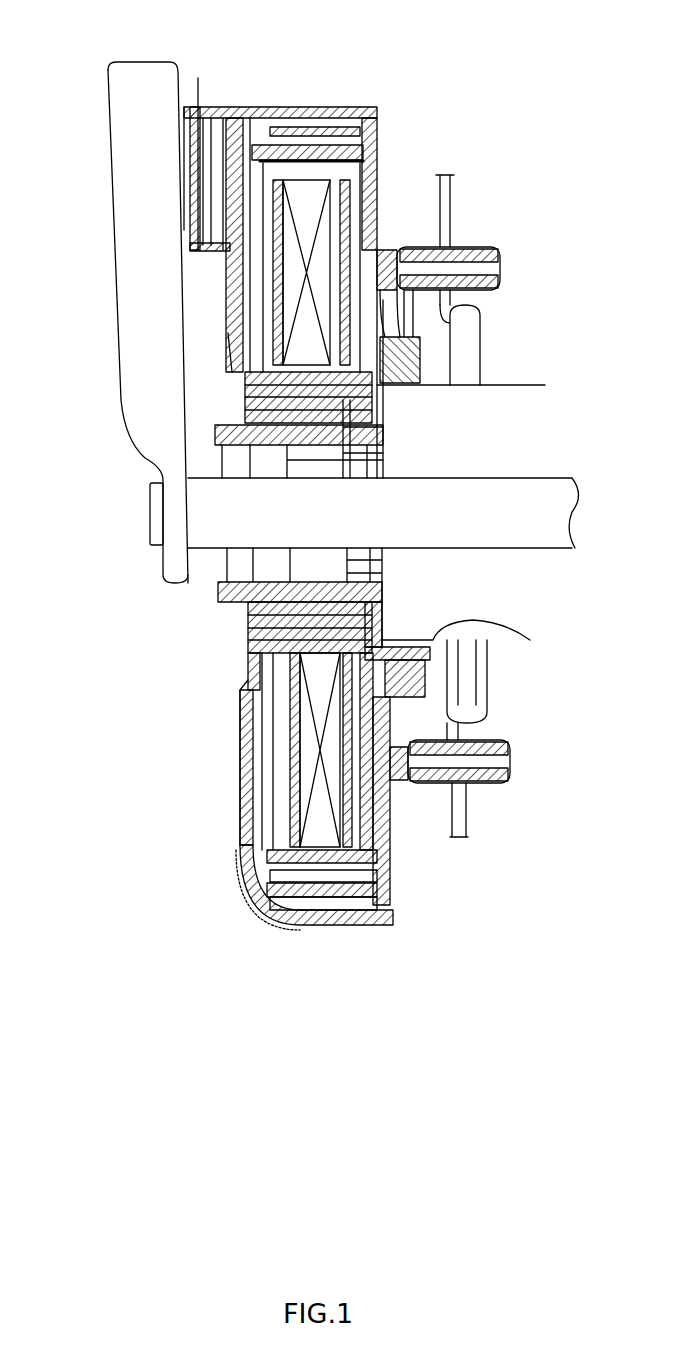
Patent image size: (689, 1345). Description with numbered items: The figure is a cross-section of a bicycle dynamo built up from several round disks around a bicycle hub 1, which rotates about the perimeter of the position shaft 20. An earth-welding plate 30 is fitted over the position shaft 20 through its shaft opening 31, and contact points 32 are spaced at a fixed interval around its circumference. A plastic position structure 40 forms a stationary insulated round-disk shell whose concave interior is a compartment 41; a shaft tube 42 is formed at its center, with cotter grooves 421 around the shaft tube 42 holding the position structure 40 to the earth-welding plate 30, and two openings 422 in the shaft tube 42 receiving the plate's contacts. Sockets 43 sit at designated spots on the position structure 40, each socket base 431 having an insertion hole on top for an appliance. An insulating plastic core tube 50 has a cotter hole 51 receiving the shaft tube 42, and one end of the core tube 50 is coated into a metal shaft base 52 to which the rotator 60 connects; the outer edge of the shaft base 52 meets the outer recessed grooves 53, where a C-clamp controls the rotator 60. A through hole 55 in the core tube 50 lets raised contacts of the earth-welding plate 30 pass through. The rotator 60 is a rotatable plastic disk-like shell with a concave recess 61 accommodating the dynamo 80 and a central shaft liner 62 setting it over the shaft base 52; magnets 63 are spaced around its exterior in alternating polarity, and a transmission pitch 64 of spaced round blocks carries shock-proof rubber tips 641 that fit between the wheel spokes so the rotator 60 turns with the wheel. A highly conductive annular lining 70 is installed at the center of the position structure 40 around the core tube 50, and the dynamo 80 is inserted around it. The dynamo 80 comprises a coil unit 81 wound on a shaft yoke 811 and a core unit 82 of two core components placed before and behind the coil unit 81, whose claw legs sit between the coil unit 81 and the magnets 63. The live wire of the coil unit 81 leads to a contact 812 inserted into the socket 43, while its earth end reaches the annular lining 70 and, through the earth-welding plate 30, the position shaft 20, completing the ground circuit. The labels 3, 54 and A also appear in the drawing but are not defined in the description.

The bicycle hub 1 is at (545, 393).
The terminal 3 is at (450, 193).
The position shaft 20 is at (568, 475).
The earth-welding plate 30 is at (390, 436).
The shaft opening 31 is at (182, 565).
The contact points 32 is at (395, 400).
The position structure 40 is at (270, 96).
The compartment 41 is at (250, 123).
The shaft tube 42 is at (250, 405).
The socket 43 is at (183, 210).
The core tube 50 is at (430, 370).
The cotter hole 51 is at (247, 388).
The shaft base 52 is at (397, 347).
The outer recessed grooves 53 is at (530, 640).
The lead wire loop 54 is at (443, 300).
The through hole 55 is at (250, 637).
The rotator 60 is at (382, 130).
The concave recess 61 is at (378, 168).
The shaft liner 62 is at (411, 247).
The magnets 63 is at (330, 140).
The transmission pitch 64 is at (490, 790).
The annular lining 70 is at (383, 613).
The dynamo 80 is at (322, 178).
The coil unit 81 is at (325, 840).
The core unit 82 is at (370, 835).
The cotter grooves 421 is at (233, 602).
The openings 422 is at (247, 618).
The socket base 431 is at (198, 78).
The shock-proof rubber tips 641 is at (510, 752).
The shaft yoke 811 is at (297, 828).
The contact 812 is at (187, 163).
The axis A is at (330, 925).